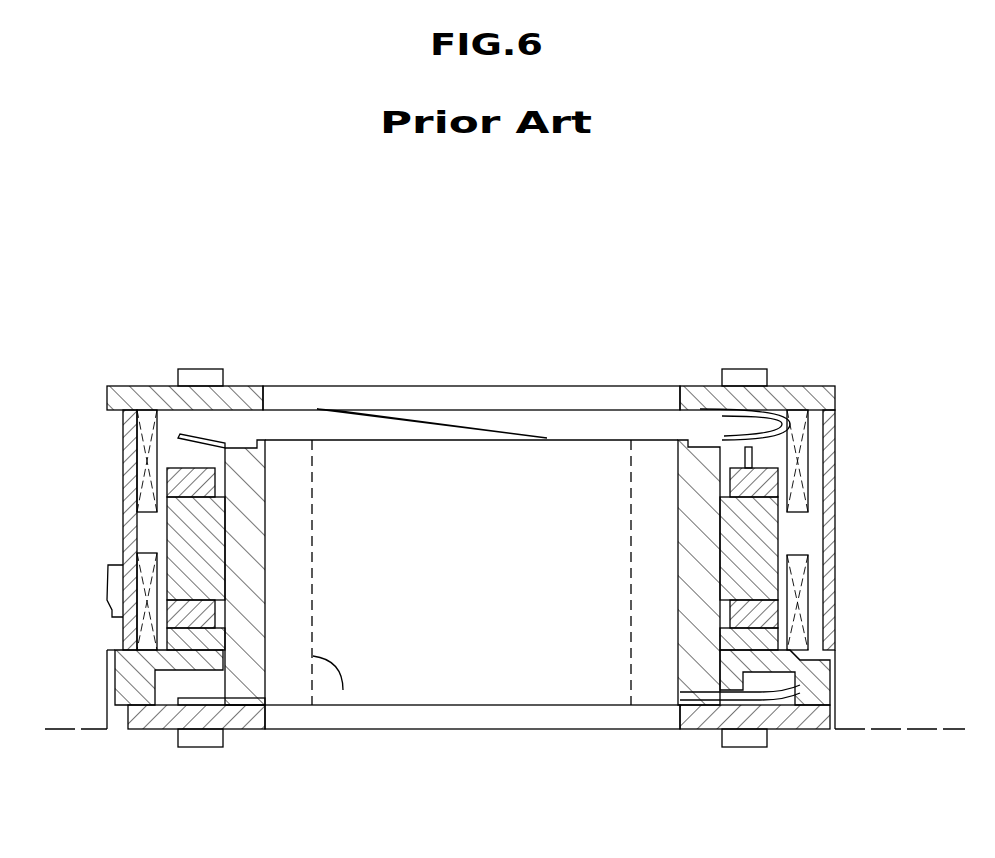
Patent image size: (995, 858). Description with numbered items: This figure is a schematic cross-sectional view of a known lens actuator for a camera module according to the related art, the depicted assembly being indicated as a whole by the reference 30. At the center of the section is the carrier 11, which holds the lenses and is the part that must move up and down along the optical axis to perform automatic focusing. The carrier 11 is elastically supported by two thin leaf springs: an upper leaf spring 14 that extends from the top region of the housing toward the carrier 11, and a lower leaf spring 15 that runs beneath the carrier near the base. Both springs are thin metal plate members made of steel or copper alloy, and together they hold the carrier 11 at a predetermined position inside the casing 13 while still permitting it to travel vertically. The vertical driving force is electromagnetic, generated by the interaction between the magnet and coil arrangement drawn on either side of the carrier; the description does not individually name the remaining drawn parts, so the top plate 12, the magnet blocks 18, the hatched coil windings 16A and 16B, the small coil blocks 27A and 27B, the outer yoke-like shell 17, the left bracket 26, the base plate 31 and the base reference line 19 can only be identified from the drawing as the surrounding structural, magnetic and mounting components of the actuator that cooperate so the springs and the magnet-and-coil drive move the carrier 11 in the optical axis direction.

The lens driving device (prior art) 30 is at (603, 260).
The upper plate 12 is at (825, 393).
The carrier 11 is at (693, 463).
The upper leaf spring 14 is at (450, 420).
The upper coil 27A is at (750, 483).
The lower coil 27B is at (770, 620).
The magnet 18 is at (757, 538).
The upper coil winding 16A is at (803, 462).
The lower coil winding 16B is at (803, 604).
The yoke 17 is at (838, 571).
The left base bracket 26 is at (165, 718).
The casing 13 is at (813, 687).
The lower leaf spring 15 is at (740, 697).
The base plate 31 is at (339, 706).
The substrate line 19 is at (857, 731).